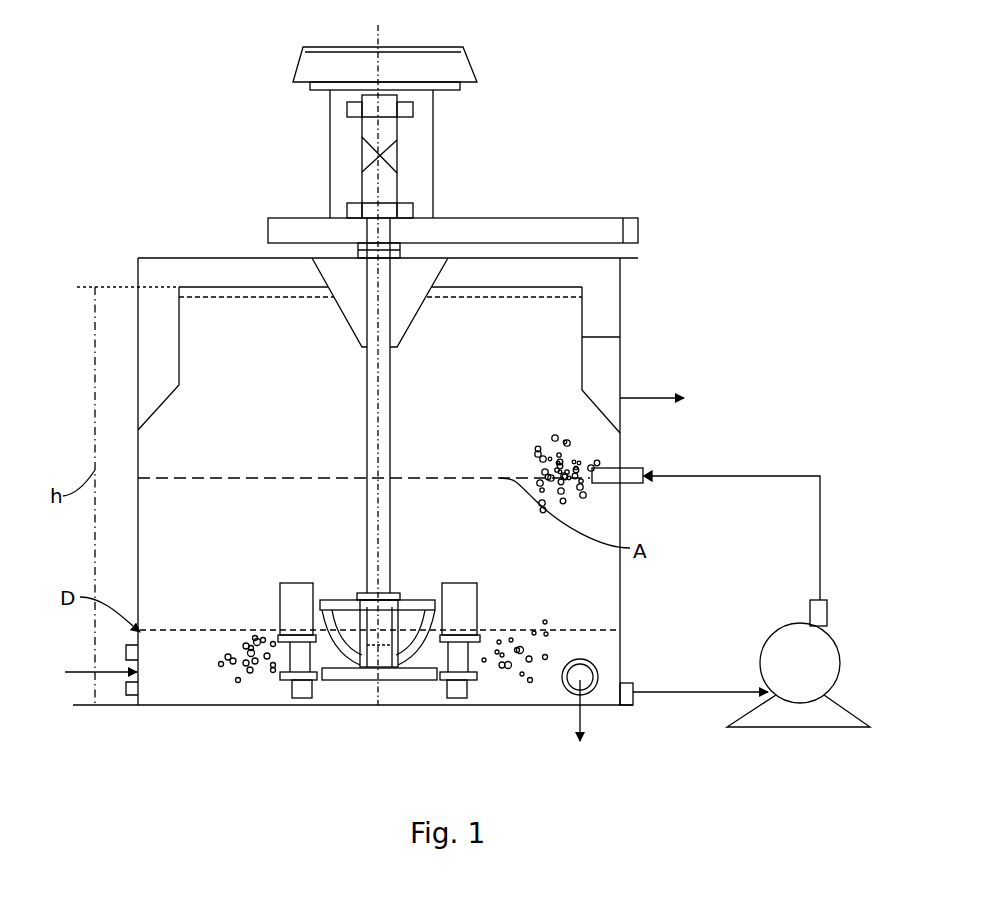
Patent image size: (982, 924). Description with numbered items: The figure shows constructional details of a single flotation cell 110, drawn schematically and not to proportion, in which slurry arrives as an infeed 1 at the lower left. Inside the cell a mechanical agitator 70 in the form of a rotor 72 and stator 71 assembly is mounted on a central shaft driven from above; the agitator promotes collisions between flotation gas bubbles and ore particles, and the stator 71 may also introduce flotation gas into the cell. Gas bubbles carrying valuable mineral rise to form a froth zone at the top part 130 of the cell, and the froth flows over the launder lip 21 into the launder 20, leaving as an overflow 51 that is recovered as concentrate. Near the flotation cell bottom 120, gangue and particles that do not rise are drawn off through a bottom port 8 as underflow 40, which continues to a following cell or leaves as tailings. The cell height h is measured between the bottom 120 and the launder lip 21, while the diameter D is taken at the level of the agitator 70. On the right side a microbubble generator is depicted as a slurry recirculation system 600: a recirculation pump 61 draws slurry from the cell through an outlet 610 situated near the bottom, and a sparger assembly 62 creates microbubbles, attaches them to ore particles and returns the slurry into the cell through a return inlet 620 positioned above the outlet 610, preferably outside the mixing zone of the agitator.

The infeed 1 is at (118, 679).
The drain port 8 is at (588, 690).
The launder 20 is at (607, 312).
The launder lip 21 is at (628, 247).
The underflow 40 is at (572, 712).
The overflow 51 is at (655, 398).
The recirculation pump 61 is at (782, 632).
The sparger assembly 62 is at (645, 470).
The mechanical agitator 70 is at (407, 680).
The stator 71 is at (280, 662).
The rotor 72 is at (323, 673).
The flotation cell 110 is at (286, 453).
The flotation cell bottom 120 is at (400, 706).
The top part of the flotation cell 130 is at (260, 290).
The slurry recirculation system 600 is at (773, 457).
The outlet 610 is at (633, 681).
The return inlet 620 is at (613, 467).